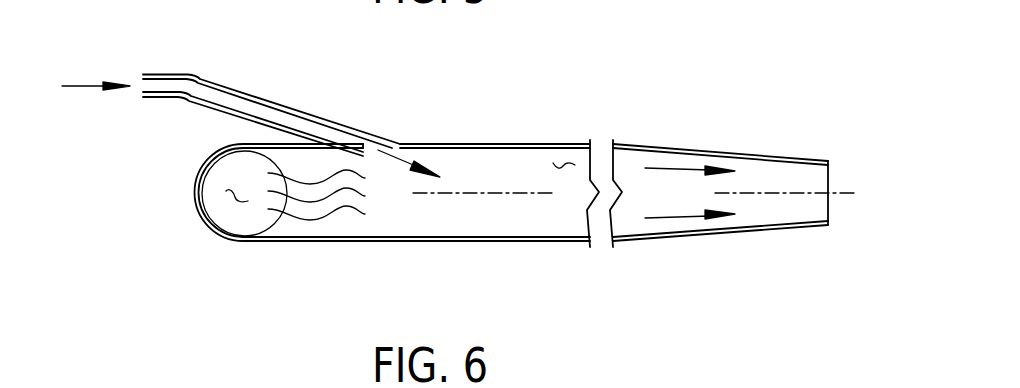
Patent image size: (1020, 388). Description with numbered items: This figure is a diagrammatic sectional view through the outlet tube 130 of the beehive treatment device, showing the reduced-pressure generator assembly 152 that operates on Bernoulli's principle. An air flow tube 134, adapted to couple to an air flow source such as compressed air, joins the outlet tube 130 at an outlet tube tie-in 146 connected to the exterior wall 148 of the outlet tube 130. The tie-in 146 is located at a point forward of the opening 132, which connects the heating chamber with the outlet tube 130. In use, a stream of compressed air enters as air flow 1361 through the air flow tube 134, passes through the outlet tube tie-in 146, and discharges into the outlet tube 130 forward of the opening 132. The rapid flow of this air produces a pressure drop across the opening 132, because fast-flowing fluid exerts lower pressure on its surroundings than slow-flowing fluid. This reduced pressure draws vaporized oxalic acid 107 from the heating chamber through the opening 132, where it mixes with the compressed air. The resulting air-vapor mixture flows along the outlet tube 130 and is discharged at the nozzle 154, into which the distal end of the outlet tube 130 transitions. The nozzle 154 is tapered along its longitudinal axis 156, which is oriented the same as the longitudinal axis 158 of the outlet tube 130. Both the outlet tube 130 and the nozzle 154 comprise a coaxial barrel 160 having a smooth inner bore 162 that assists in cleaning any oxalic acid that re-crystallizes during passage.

The outlet tube 130 is at (654, 71).
The air flow tube 134 is at (193, 74).
The air flow 1361 is at (80, 86).
The outlet tube tie-in 146 is at (402, 143).
The exterior wall 148 is at (497, 142).
The inner bore 162 is at (553, 163).
The vaporized oxalic acid 107 is at (660, 168).
The longitudinal axis of nozzle 156 is at (775, 192).
The longitudinal axis of outlet tube 158 is at (523, 193).
The nozzle 154 is at (783, 230).
The barrel 160 is at (430, 220).
The reduced-pressure generator assembly 152 is at (252, 252).
The opening 132 is at (232, 200).